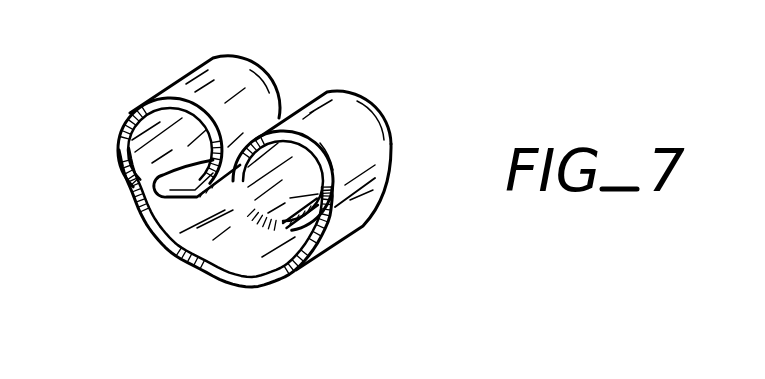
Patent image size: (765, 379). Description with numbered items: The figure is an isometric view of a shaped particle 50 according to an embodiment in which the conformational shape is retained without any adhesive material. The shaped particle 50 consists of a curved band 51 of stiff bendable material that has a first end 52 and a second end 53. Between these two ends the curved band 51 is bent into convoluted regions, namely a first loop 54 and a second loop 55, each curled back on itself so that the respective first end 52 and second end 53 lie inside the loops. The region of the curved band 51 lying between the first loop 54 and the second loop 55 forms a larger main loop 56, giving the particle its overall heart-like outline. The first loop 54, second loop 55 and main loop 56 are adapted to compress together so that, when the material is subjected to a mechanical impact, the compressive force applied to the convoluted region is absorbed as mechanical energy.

The shaped particle 50 is at (152, 288).
The curved band 51 is at (295, 278).
The first end 52 is at (158, 175).
The second end 53 is at (302, 198).
The first loop 54 is at (332, 101).
The second loop 55 is at (193, 93).
The main loop 56 is at (218, 257).